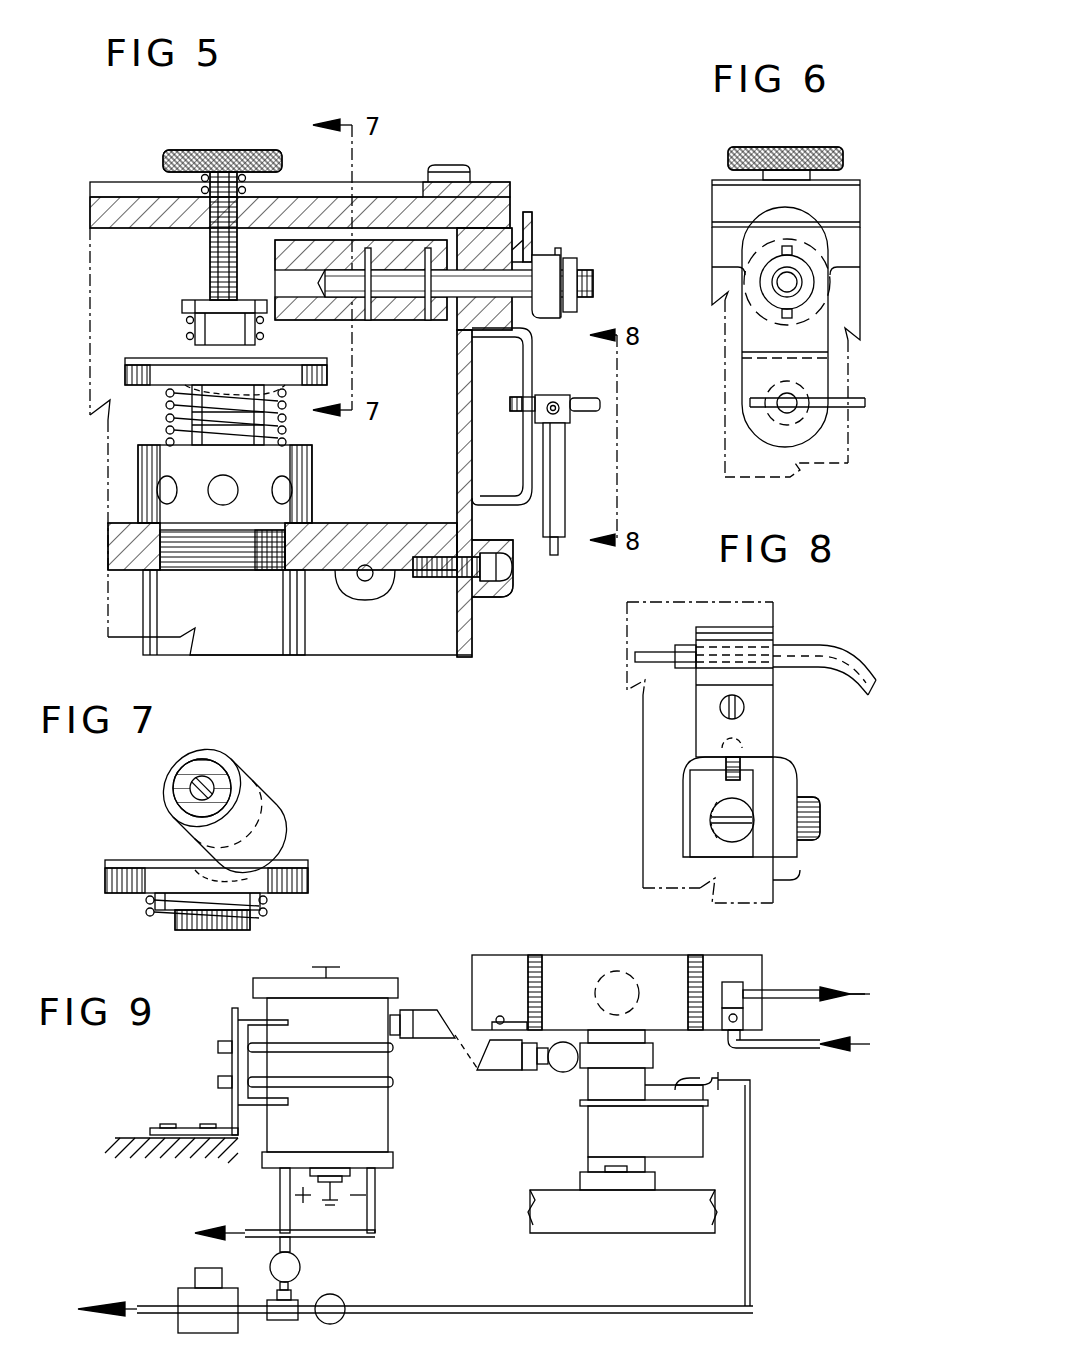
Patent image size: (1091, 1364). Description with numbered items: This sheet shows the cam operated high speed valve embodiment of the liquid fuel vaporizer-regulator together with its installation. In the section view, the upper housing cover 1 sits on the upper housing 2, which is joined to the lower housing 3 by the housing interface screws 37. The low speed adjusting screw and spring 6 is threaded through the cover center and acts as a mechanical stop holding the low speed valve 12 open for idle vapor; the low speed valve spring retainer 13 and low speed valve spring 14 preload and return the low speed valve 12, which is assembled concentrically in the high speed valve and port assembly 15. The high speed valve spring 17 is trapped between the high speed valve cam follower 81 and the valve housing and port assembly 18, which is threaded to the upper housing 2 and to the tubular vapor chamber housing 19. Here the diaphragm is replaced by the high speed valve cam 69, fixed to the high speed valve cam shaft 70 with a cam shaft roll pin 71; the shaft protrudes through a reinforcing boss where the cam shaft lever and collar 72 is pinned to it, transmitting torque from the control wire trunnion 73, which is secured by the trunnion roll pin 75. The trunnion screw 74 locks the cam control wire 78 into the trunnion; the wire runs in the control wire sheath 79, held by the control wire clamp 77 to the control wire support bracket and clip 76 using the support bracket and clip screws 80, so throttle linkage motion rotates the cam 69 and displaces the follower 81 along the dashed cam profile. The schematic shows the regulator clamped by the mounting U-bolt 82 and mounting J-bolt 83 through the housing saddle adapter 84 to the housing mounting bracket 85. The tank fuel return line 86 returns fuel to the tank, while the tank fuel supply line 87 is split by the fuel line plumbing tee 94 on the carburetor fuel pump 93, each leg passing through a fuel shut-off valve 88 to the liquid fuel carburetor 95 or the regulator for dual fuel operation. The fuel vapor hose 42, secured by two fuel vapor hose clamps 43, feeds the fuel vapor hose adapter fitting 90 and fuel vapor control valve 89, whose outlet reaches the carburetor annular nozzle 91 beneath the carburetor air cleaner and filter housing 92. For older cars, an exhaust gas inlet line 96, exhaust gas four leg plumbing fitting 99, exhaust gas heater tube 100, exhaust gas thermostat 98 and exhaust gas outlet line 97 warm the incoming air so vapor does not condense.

In FIG. 5, the upper housing cover 1 is at (90, 218).
In FIG. 5, the upper housing 2 is at (460, 482).
In FIG. 8, the upper housing 2 is at (775, 705).
In FIG. 5, the lower housing 3 is at (460, 645).
In FIG. 8, the lower housing 3 is at (775, 888).
In FIG. 5, the low speed adjusting screw and spring 6 is at (218, 150).
In FIG. 5, the low speed valve 12 is at (210, 270).
In FIG. 5, the low speed valve spring retainer 13 is at (185, 305).
In FIG. 5, the low speed valve spring 14 is at (200, 338).
In FIG. 5, the high speed valve and port assembly 15 is at (168, 430).
In FIG. 7, the high speed valve and port assembly 15 is at (200, 928).
In FIG. 5, the high speed valve spring 17 is at (168, 402).
In FIG. 7, the high speed valve spring 17 is at (150, 910).
In FIG. 5, the valve housing and port assembly 18 is at (312, 506).
In FIG. 5, the vapor chamber housing 19 is at (305, 600).
In FIG. 8, the housing interface screws 37 is at (815, 832).
In FIG. 9, the fuel vapor hose 42 is at (430, 1008).
In FIG. 9, the fuel vapor hose clamps 43 is at (408, 1010).
In FIG. 5, the high speed valve cam 69 is at (388, 250).
In FIG. 7, the high speed valve cam 69 is at (242, 756).
In FIG. 5, the high speed valve cam shaft 70 is at (590, 275).
In FIG. 5, the cam shaft roll pin 71 is at (560, 250).
In FIG. 5, the cam shaft lever and collar 72 is at (530, 258).
In FIG. 6, the cam shaft lever and collar 72 is at (742, 325).
In FIG. 5, the control wire trunnion 73 is at (540, 422).
In FIG. 5, the trunnion screw 74 is at (516, 396).
In FIG. 6, the trunnion roll pin 75 is at (785, 408).
In FIG. 5, the control wire support bracket and clip 76 is at (515, 545).
In FIG. 8, the control wire support bracket and clip 76 is at (686, 822).
In FIG. 8, the control wire clamp 77 is at (720, 710).
In FIG. 6, the cam control wire 78 is at (860, 412).
In FIG. 8, the cam control wire 78 is at (660, 656).
In FIG. 8, the control wire sheath 79 is at (790, 652).
In FIG. 5, the support bracket and clip screws 80 is at (563, 445).
In FIG. 8, the support bracket and clip screws 80 is at (728, 768).
In FIG. 5, the high speed valve cam follower 81 is at (125, 370).
In FIG. 7, the high speed valve cam follower 81 is at (308, 875).
In FIG. 9, the mounting U-bolt 82 is at (218, 1047).
In FIG. 9, the mounting J-bolt 83 is at (393, 1085).
In FIG. 9, the housing saddle adapter 84 is at (282, 1105).
In FIG. 9, the housing mounting bracket 85 is at (150, 1128).
In FIG. 9, the tank fuel return line 86 is at (376, 1212).
In FIG. 9, the tank fuel supply line 87 is at (520, 1306).
In FIG. 9, the fuel shut-off valve 88 is at (270, 1262).
In FIG. 9, the fuel vapor control valve 89 is at (560, 1074).
In FIG. 9, the fuel vapor hose adapter fitting 90 is at (530, 1072).
In FIG. 9, the carburetor annular nozzle 91 is at (655, 1055).
In FIG. 9, the carburetor air cleaner and filter housing 92 is at (625, 955).
In FIG. 9, the carburetor fuel pump 93 is at (178, 1293).
In FIG. 9, the fuel line plumbing tee 94 is at (297, 1302).
In FIG. 9, the liquid fuel carburetor 95 is at (703, 1135).
In FIG. 9, the exhaust gas inlet line 96 is at (780, 1050).
In FIG. 9, the exhaust gas outlet line 97 is at (790, 990).
In FIG. 9, the exhaust gas thermostat 98 is at (732, 981).
In FIG. 9, the exhaust gas four leg plumbing fitting 99 is at (745, 1018).
In FIG. 9, the exhaust gas heater tube 100 is at (504, 1016).